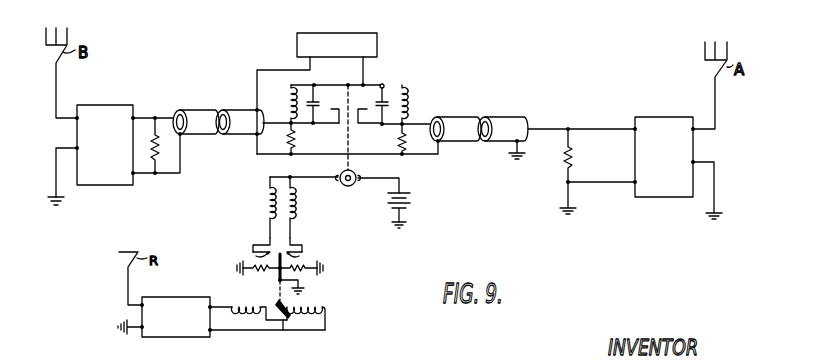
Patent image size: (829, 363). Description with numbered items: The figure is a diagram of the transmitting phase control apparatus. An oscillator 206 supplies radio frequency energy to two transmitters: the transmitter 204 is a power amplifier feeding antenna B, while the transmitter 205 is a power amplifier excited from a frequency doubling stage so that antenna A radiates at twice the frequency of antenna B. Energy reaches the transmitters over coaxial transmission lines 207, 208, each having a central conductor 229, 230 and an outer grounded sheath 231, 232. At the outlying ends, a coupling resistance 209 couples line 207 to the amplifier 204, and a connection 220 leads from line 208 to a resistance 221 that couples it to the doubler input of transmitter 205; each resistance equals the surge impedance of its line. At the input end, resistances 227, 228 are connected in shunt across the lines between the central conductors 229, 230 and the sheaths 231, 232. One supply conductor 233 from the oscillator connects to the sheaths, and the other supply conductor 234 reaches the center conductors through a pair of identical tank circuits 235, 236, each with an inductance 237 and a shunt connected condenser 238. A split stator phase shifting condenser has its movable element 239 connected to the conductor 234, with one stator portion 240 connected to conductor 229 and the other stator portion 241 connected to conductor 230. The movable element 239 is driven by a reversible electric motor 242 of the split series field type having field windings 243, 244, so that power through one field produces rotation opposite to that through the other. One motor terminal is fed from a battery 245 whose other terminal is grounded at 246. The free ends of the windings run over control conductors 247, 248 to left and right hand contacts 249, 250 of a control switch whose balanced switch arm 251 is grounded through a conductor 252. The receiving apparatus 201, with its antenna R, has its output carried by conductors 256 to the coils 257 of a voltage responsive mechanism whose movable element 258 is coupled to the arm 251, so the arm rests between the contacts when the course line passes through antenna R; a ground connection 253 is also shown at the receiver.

The receiving apparatus 201 is at (205, 296).
The transmitter 204 is at (102, 186).
The transmitter 205 is at (698, 153).
The oscillator 206 is at (334, 33).
The transmission line 207 is at (205, 112).
The transmission line 208 is at (469, 117).
The coupling resistance 209 is at (153, 117).
The conductor 220 is at (594, 128).
The resistance 221 is at (573, 159).
The resistance 227 is at (295, 144).
The resistance 228 is at (405, 146).
The central conductor 229 is at (278, 125).
The central conductor 230 is at (415, 124).
The outer grounded sheath 231 is at (238, 135).
The outer grounded sheath 232 is at (505, 143).
The supply conductor 233 is at (257, 91).
The supply conductor 234 is at (365, 72).
The tank circuit 235 is at (318, 100).
The tank circuit 236 is at (386, 103).
The inductance 237 is at (290, 111).
The shunt connected condenser 238 is at (310, 101).
The movable element 239 is at (349, 96).
The stator portion 240 is at (339, 114).
The stator portion 241 is at (358, 114).
The reversible electric motor 242 is at (341, 186).
The series field winding 243 is at (267, 213).
The series field winding 244 is at (295, 212).
The battery 245 is at (411, 198).
The ground 246 is at (404, 223).
The control conductor 247 is at (268, 239).
The control conductor 248 is at (293, 239).
The left hand contact 249 is at (252, 252).
The right hand contact 250 is at (305, 252).
The balanced switch arm 251 is at (273, 275).
The conductor 252 is at (303, 286).
The ground 253 is at (150, 337).
The conductor 256 is at (230, 313).
The coil 257 is at (327, 316).
The movable element 258 is at (284, 328).